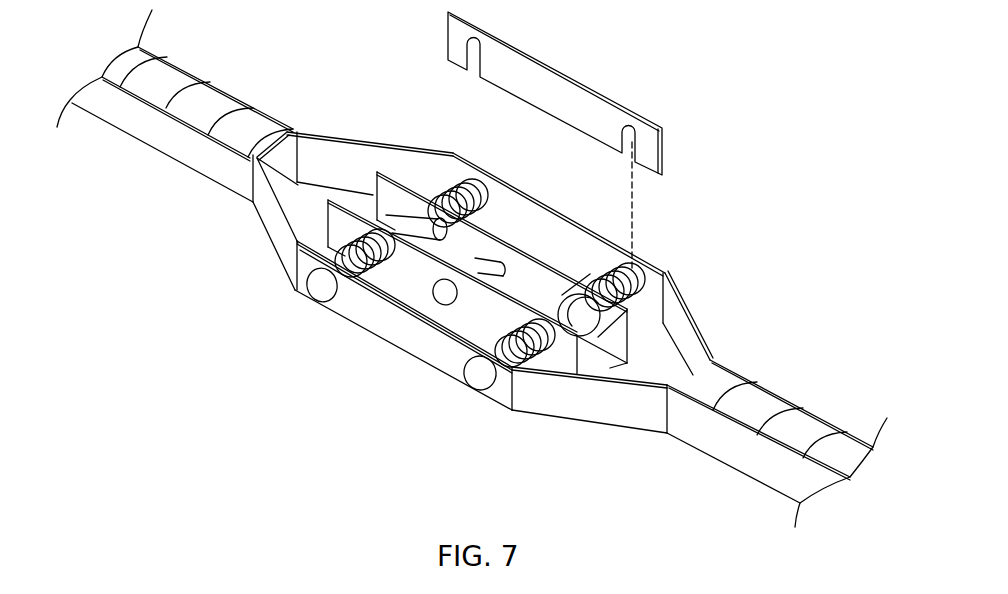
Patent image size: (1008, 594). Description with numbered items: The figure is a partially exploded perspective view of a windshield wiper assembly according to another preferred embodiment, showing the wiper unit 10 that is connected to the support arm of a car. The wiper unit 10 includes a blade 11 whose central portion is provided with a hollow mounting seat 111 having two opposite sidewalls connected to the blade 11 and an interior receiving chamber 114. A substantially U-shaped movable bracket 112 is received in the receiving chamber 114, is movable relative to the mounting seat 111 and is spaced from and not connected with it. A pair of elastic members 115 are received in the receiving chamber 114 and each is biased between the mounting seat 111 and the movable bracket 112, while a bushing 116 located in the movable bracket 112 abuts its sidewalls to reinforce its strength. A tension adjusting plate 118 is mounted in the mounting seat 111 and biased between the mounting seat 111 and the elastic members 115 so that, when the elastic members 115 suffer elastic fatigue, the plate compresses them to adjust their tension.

The wiper unit 10 is at (281, 112).
The blade 11 is at (185, 148).
The mounting seat 111 is at (392, 322).
The movable bracket 112 is at (473, 317).
The receiving chamber 114 is at (422, 181).
The elastic members 115 is at (617, 283).
The bushing 116 is at (573, 320).
The tension adjusting plate 118 is at (593, 108).